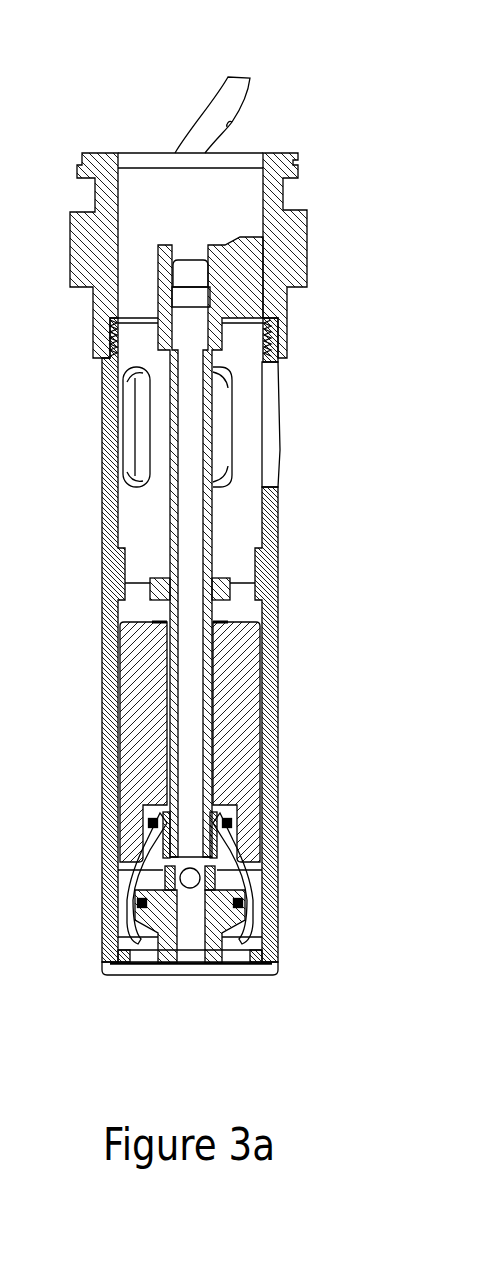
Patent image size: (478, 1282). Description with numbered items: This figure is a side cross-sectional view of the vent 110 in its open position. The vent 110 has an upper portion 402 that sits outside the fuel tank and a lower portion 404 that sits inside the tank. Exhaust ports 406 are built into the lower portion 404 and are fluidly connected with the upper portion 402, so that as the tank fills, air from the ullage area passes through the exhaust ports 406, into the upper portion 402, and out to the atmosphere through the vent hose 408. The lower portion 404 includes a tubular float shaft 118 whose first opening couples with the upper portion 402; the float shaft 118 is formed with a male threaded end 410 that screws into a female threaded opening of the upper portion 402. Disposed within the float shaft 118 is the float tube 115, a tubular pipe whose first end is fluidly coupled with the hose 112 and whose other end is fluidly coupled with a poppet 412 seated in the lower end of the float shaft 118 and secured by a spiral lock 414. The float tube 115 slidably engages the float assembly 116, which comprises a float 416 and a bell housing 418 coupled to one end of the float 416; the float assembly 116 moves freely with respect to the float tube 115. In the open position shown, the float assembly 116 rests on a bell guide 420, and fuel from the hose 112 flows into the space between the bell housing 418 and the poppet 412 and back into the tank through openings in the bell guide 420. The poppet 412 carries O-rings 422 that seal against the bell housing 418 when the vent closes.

The vent 110 is at (104, 74).
The upper portion 402 is at (82, 295).
The vent hose 408 is at (252, 102).
The lower portion 404 is at (300, 970).
The male threaded end 410 is at (272, 343).
The exhaust ports 406 is at (222, 422).
The float tube 115 is at (211, 457).
The float shaft 118 is at (278, 497).
The float 416 is at (258, 646).
The O-rings 422 is at (228, 821).
The bell housing 418 is at (248, 878).
The poppet 412 is at (218, 923).
The bell guide 420 is at (147, 962).
The spiral lock 414 is at (258, 970).
The float assembly 116 is at (95, 628).
The hose 112 is at (206, 1096).